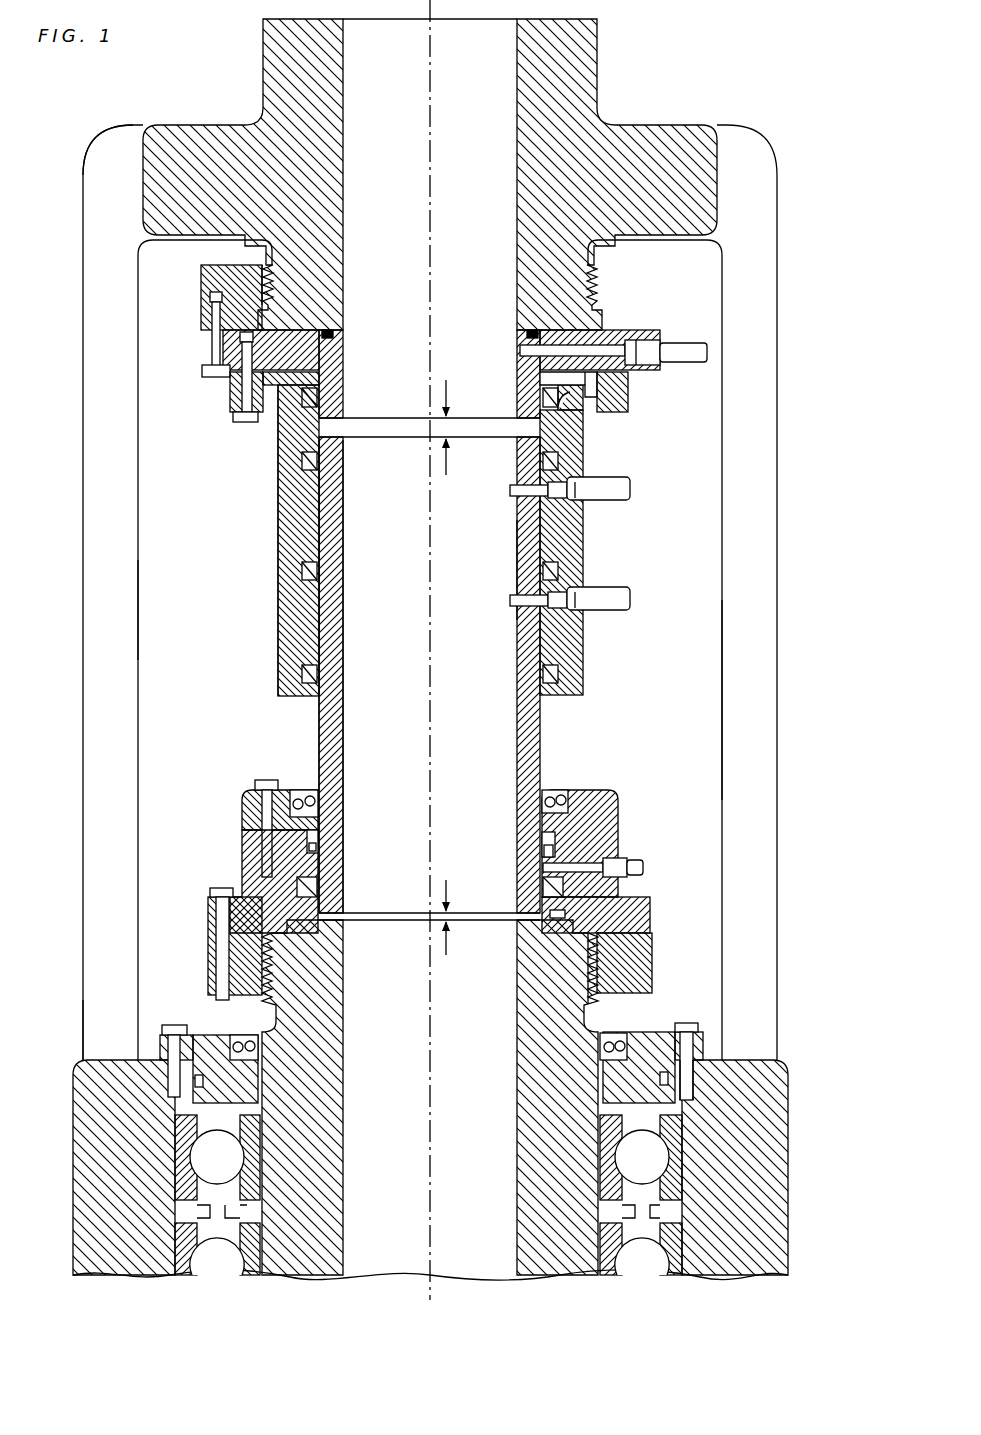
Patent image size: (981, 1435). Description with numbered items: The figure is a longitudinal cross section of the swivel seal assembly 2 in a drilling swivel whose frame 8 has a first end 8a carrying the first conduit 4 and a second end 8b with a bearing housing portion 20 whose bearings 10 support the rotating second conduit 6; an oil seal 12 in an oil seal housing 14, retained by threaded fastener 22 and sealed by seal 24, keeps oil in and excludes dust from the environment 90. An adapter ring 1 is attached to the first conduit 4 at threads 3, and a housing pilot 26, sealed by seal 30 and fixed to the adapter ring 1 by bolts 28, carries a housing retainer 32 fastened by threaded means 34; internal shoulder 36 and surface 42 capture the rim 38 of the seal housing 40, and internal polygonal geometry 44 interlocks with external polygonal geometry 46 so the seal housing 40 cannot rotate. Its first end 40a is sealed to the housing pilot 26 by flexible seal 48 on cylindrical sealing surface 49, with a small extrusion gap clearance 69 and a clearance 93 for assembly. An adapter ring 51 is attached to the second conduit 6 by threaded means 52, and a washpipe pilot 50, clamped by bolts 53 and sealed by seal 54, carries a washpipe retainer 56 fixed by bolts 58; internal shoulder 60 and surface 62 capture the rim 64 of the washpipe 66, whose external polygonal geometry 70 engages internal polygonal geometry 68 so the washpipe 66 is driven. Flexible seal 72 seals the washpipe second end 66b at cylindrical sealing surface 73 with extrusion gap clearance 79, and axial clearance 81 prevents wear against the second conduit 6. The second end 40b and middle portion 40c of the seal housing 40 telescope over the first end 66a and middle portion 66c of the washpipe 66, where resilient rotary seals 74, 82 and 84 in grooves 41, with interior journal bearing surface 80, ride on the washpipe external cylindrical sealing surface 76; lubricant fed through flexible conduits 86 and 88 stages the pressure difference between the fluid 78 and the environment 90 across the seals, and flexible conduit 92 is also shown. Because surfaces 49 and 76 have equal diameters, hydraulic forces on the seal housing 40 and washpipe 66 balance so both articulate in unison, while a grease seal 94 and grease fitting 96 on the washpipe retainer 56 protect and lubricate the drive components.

The adapter ring 1 is at (201, 283).
The swivel seal assembly 2 is at (210, 615).
The threads 3 is at (262, 312).
The first conduit 4 is at (550, 62).
The second conduit 6 is at (600, 1012).
The frame 8 is at (102, 590).
The first end 8a is at (200, 100).
The second end 8b is at (74, 1076).
The bearings 10 is at (700, 1250).
The oil seal 12 is at (640, 1032).
The oil seal housing 14 is at (705, 1048).
The bearing housing portion 20 is at (125, 1145).
The threaded fastener 22 is at (700, 1027).
The seal 24 is at (695, 1085).
The housing pilot 26 is at (525, 400).
The circle of bolts 28 is at (205, 372).
The seal 30 is at (528, 328).
The housing retainer 32 is at (232, 405).
The threaded means 34 is at (236, 422).
The internal shoulder 36 is at (585, 400).
The rim 38 is at (600, 395).
The seal housing 40 is at (565, 550).
The first end 40a is at (290, 425).
The second end 40b is at (285, 680).
The middle portion 40c is at (320, 520).
The grooves 41 is at (305, 470).
The surface 42 is at (543, 380).
The internal polygonal geometry 44 is at (320, 378).
The external polygonal geometry 46 is at (240, 395).
The flexible seal 48 is at (318, 398).
The cylindrical sealing surface 49 is at (598, 379).
The washpipe pilot 50 is at (245, 870).
The adapter ring 51 is at (212, 960).
The threaded means 52 is at (588, 980).
The pattern of bolts 53 is at (212, 892).
The seal 54 is at (590, 953).
The washpipe retainer 56 is at (242, 812).
The circle of bolts 58 is at (255, 785).
The internal shoulder 60 is at (543, 845).
The surface 62 is at (546, 858).
The rim 64 is at (318, 840).
The washpipe 66 is at (331, 745).
The first end 66a is at (335, 470).
The second end 66b is at (335, 905).
The middle portion 66c is at (335, 666).
The internal polygonal geometry 68 is at (318, 855).
The extrusion gap clearance 69 is at (333, 368).
The external polygonal geometry 70 is at (600, 850).
The flexible seal 72 is at (548, 890).
The washpipe cylindrical sealing surface 73 is at (620, 910).
The resilient rotary seal 74 is at (545, 460).
The washpipe external cylindrical sealing surface 76 is at (318, 720).
The fluid 78 is at (430, 650).
The extrusion gap clearance 79 is at (317, 885).
The interior journal bearing surface 80 is at (517, 580).
The axial clearance 81 is at (429, 929).
The resilient rotary seal 82 is at (560, 580).
The resilient rotary seal 84 is at (545, 680).
The flexible conduit 86 is at (612, 482).
The flexible conduit 88 is at (612, 590).
The environment 90 is at (678, 700).
The flexible conduit 92 is at (650, 345).
The clearance 93 is at (429, 440).
The grease seal 94 is at (555, 795).
The grease fitting 96 is at (640, 873).